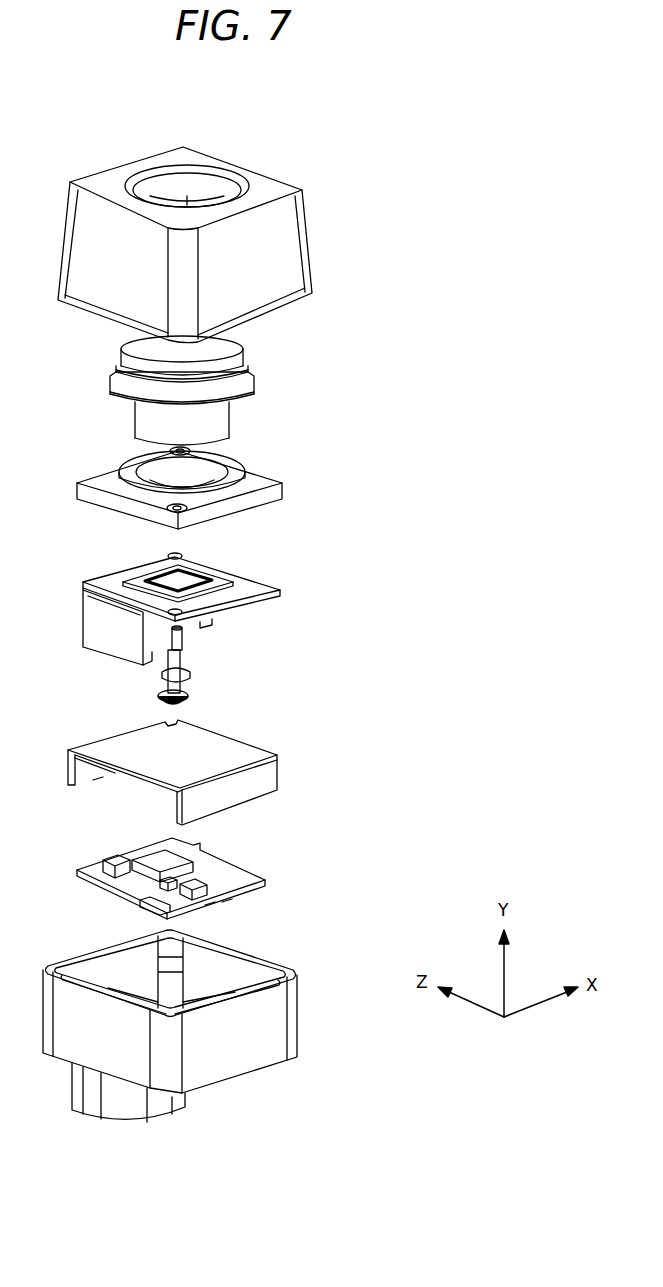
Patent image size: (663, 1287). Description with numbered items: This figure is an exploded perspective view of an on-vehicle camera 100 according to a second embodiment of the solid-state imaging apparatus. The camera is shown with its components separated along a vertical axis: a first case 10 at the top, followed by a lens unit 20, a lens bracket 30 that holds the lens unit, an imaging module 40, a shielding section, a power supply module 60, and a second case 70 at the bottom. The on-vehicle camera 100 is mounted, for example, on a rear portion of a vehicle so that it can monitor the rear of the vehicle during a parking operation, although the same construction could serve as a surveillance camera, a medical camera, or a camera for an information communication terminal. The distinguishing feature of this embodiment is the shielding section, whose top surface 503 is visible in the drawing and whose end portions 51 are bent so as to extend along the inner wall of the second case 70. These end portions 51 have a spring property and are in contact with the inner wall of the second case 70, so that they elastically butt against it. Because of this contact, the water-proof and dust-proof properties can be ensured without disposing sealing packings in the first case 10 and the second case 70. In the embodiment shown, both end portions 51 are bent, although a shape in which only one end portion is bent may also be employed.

The on-vehicle camera 100 is at (256, 106).
The first case 10 is at (255, 272).
The lens unit 20 is at (202, 415).
The lens bracket 30 is at (240, 478).
The imaging module 40 is at (240, 575).
The top surface of shield cover 503 is at (235, 750).
The end portions 51 is at (227, 793).
The power supply module 60 is at (213, 875).
The second case 70 is at (255, 1045).